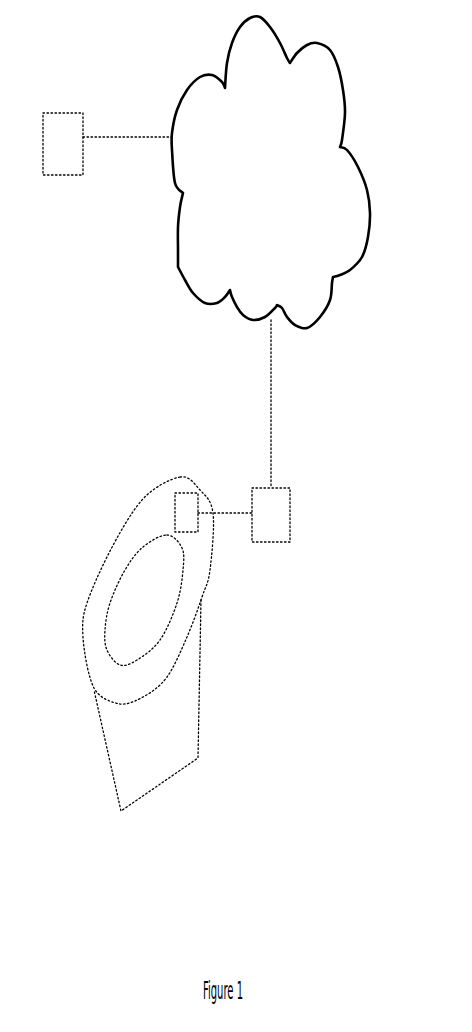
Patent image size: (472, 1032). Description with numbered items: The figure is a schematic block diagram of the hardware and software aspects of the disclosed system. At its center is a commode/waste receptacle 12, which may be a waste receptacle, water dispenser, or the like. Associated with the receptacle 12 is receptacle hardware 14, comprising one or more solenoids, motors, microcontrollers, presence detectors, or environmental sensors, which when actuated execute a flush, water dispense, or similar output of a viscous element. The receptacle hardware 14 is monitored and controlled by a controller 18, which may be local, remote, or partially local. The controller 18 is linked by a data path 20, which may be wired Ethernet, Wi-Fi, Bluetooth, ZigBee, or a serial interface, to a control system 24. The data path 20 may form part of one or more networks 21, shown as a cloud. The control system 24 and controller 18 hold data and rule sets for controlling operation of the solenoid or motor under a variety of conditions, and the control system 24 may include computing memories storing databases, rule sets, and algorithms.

The commode/waste receptacle 12 is at (200, 717).
The receptacle hardware 14 is at (213, 512).
The controller 18 is at (271, 515).
The data path 20 is at (272, 430).
The network 21 is at (178, 267).
The control system 24 is at (107, 144).